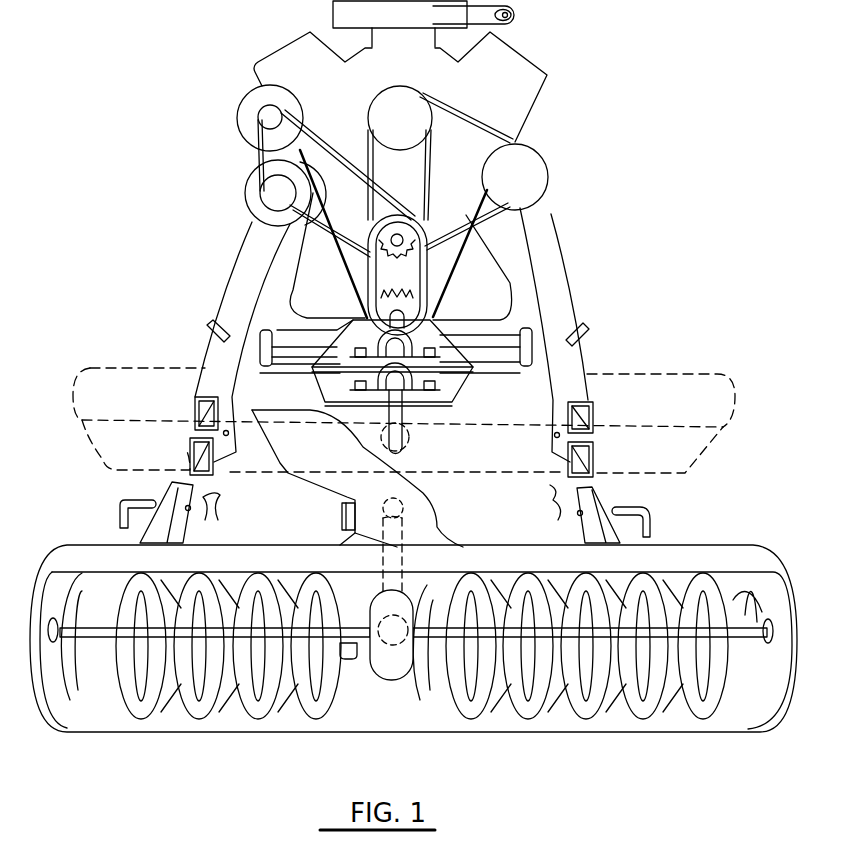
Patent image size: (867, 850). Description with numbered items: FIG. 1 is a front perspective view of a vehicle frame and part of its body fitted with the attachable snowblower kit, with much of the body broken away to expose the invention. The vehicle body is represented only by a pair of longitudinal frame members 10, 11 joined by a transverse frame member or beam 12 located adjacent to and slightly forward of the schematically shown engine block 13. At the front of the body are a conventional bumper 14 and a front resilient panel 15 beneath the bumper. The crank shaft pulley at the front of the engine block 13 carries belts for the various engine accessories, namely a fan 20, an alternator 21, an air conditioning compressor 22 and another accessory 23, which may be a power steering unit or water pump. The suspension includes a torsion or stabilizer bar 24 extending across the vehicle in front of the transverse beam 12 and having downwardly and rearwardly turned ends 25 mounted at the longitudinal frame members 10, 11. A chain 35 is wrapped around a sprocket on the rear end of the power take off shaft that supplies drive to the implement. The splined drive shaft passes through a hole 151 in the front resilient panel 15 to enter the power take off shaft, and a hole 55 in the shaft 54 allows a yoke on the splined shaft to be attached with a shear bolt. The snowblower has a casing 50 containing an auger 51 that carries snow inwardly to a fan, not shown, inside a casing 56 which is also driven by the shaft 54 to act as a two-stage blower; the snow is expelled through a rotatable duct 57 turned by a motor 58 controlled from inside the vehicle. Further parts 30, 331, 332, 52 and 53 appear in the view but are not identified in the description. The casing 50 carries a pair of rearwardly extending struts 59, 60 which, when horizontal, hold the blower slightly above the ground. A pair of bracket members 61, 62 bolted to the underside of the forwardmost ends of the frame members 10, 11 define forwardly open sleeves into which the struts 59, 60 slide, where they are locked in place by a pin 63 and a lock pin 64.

The longitudinal frame member 10 is at (258, 256).
The longitudinal frame member 11 is at (545, 262).
The transverse frame member or beam 12 is at (478, 327).
The engine block 13 is at (513, 77).
The bumper 14 is at (130, 377).
The front resilient panel 15 is at (108, 458).
The fan 20 is at (388, 107).
The alternator 21 is at (253, 193).
The air conditioning compressor 22 is at (247, 110).
The accessory 23 is at (522, 178).
The stabilizer bar 24 is at (315, 342).
The turned ends 25 is at (590, 332).
The bearing housing 30 is at (476, 401).
The chain 35 is at (361, 272).
The output shaft 331 is at (378, 432).
The shaft coupling 332 is at (405, 437).
The hole 151 is at (419, 459).
The casing 50 is at (501, 717).
The auger 51 is at (262, 707).
The auger shaft 52 is at (221, 646).
The auger hub 53 is at (390, 652).
The shaft 54 is at (432, 527).
The hole 55 is at (404, 510).
The casing 56 is at (347, 537).
The rotatable duct 57 is at (345, 476).
The motor 58 is at (340, 511).
The strut 59 is at (173, 490).
The strut 60 is at (605, 502).
The bracket member 61 is at (218, 473).
The bracket member 62 is at (597, 456).
The pin 63 is at (120, 512).
The lock pin 64 is at (220, 521).